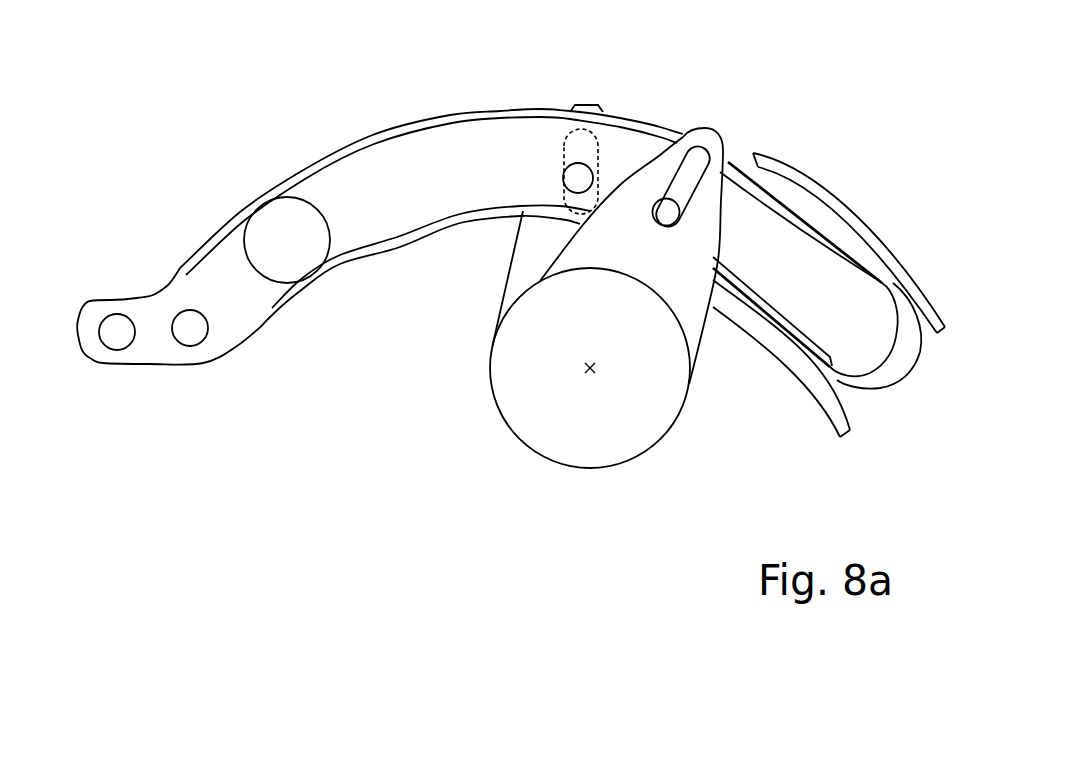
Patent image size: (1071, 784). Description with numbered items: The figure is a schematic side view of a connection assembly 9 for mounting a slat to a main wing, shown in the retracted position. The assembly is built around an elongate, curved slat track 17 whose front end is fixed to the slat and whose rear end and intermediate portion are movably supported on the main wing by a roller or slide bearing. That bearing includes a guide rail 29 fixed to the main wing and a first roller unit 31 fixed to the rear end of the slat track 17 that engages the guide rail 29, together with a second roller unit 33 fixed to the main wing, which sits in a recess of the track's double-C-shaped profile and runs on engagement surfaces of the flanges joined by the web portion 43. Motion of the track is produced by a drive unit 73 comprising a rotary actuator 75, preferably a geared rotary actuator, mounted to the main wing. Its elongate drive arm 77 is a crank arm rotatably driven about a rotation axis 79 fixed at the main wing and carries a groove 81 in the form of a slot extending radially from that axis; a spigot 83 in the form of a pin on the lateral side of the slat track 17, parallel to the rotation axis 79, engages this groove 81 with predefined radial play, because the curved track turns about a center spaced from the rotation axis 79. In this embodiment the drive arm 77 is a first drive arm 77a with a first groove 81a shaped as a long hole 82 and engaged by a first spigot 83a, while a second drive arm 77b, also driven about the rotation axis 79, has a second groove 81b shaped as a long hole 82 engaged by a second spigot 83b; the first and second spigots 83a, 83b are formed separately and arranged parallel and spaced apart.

The connection assembly 9 is at (158, 171).
The slat track 17 is at (337, 183).
The guide rail 29 is at (887, 243).
The first roller unit 31 is at (900, 368).
The second roller unit 33 is at (303, 254).
The web portion 43 is at (451, 186).
The drive unit 73 is at (432, 437).
The rotary actuator 75 is at (647, 420).
The drive arm 77 is at (531, 271).
The first drive arm 77a is at (693, 300).
The second drive arm 77b is at (527, 250).
The rotation axis 79 is at (595, 372).
The groove 81 is at (680, 123).
The first groove 81a is at (695, 160).
The second groove 81b is at (590, 152).
The long hole 82 is at (680, 123).
The spigot 83 is at (670, 137).
The first spigot 83a is at (668, 214).
The second spigot 83b is at (575, 178).